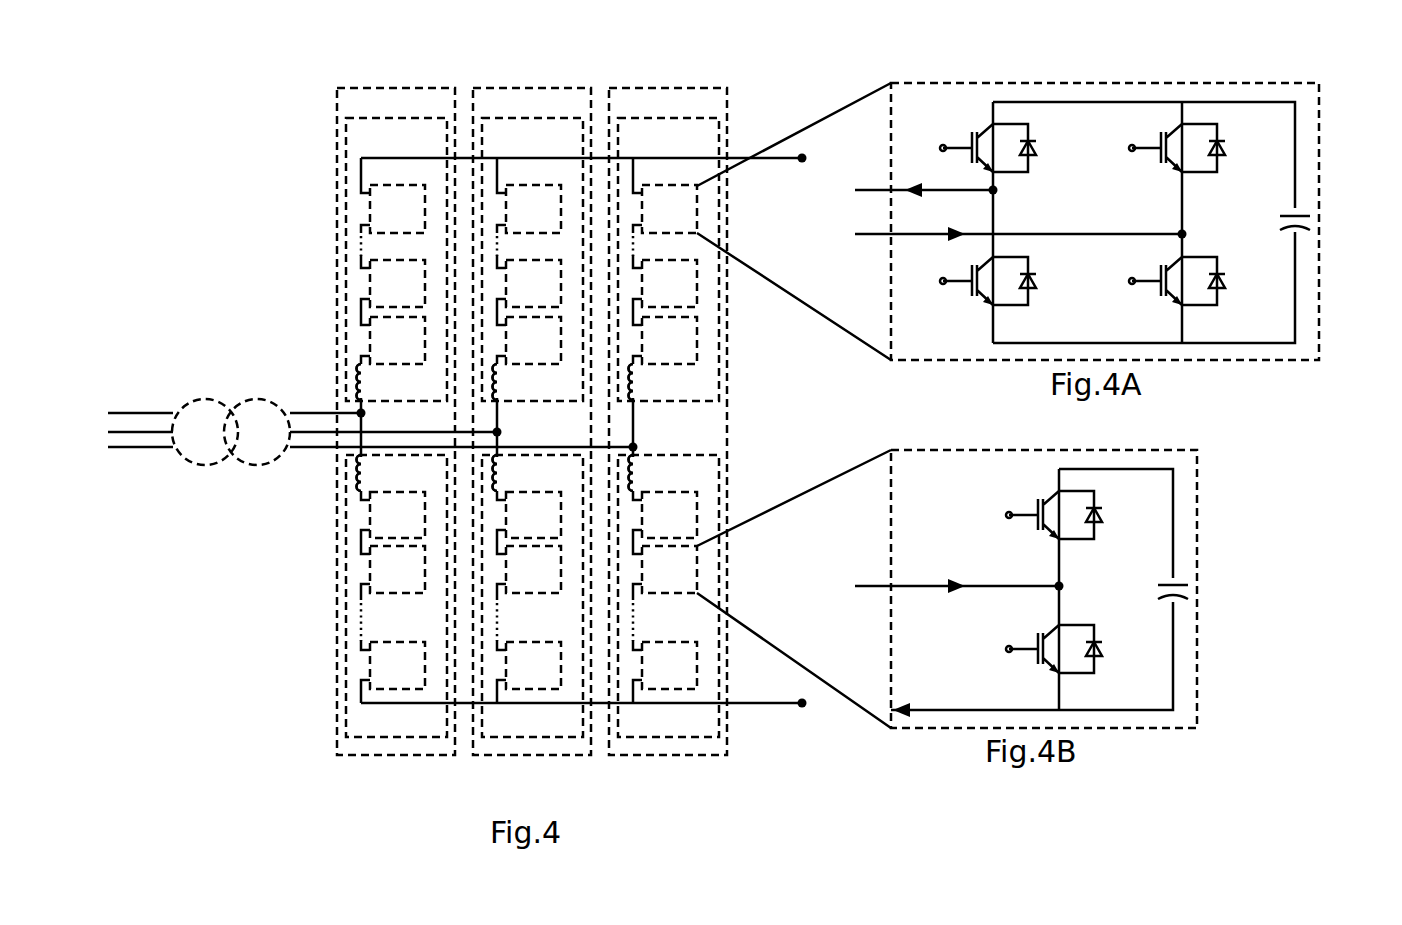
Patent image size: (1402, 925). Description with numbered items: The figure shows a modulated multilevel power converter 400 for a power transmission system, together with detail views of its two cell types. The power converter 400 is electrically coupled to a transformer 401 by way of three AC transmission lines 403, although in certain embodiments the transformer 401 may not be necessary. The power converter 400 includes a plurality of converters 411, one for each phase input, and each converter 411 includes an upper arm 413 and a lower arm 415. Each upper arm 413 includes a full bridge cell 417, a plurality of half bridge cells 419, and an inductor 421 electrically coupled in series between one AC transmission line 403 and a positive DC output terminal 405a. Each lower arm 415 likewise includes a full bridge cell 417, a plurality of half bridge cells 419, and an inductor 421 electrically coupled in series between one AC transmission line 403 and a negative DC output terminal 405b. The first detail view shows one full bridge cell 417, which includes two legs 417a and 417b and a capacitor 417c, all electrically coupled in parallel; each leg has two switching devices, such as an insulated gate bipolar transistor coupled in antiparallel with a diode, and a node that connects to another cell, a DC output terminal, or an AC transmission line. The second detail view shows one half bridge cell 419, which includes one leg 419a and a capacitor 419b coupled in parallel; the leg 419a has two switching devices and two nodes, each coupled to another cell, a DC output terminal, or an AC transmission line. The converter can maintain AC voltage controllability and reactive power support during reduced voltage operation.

In FIG. 4, the modulated multilevel power converter 400 is at (302, 798).
In FIG. 4, the transformer 401 is at (190, 400).
In FIG. 4, the AC transmission lines 403 is at (302, 468).
In FIG. 4, the positive DC output terminal 405a is at (802, 152).
In FIG. 4, the negative DC output terminal 405b is at (802, 708).
In FIG. 4, the converter 411 is at (357, 88).
In FIG. 4, the upper arm 413 is at (440, 118).
In FIG. 4, the lower arm 415 is at (400, 737).
In FIG. 4, the full bridge cell 417 is at (533, 361).
In FIG. 4A, the full bridge cell 417 is at (918, 83).
In FIG. 4A, the first leg of full bridge cell 417a is at (993, 102).
In FIG. 4A, the second leg of full bridge cell 417b is at (1182, 102).
In FIG. 4A, the full bridge cell capacitor 417c is at (1297, 162).
In FIG. 4, the half bridge cell 419 is at (533, 474).
In FIG. 4B, the half bridge cell 419 is at (918, 450).
In FIG. 4B, the leg of half bridge cell 419a is at (1059, 469).
In FIG. 4B, the half bridge cell capacitor 419b is at (1175, 520).
In FIG. 4, the inductor 421 is at (366, 381).